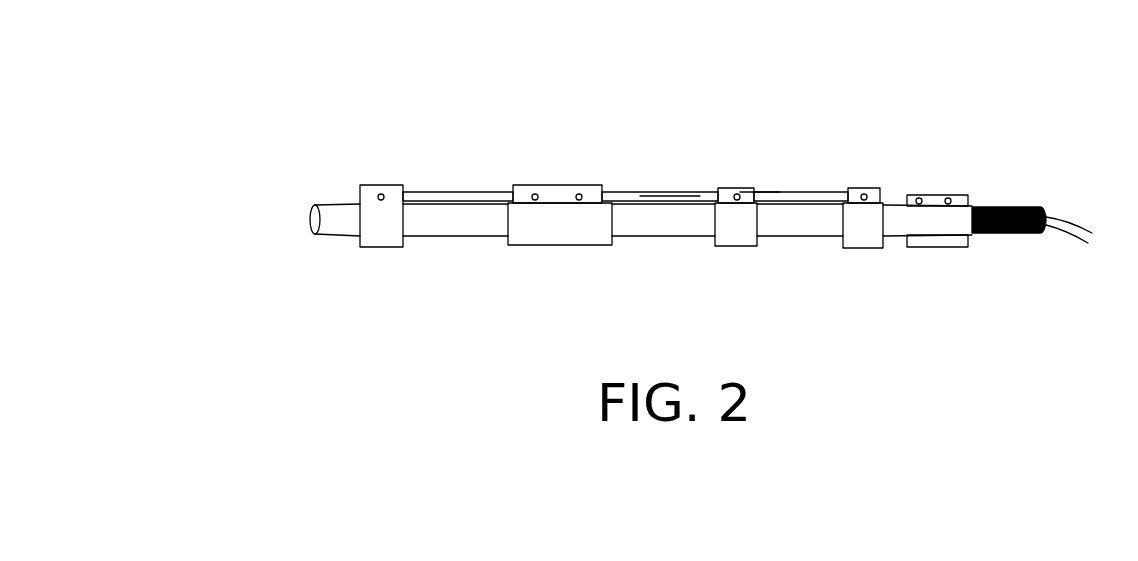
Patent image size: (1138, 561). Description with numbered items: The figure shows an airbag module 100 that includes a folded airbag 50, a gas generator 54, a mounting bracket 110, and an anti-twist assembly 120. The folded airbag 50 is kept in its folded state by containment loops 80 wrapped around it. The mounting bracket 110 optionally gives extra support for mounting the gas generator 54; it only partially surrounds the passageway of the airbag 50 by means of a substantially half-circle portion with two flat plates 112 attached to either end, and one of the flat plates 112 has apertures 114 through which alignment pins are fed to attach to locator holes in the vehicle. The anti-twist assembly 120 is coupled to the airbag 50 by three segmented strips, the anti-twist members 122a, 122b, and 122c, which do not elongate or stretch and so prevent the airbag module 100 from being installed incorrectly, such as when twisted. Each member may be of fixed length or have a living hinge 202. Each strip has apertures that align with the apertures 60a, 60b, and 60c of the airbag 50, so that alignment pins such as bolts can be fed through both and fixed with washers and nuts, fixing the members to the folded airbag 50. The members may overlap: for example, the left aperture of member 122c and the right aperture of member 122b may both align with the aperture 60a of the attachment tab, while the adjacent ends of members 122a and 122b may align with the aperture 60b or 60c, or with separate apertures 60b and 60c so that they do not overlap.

The airbag module 100 is at (955, 140).
The airbag 50 is at (328, 222).
The gas generator 54 is at (1040, 207).
The containment loops 80 is at (372, 188).
The anti-twist member 122a is at (427, 193).
The anti-twist member 122b is at (640, 187).
The anti-twist member 122c is at (807, 187).
The anti-twist assembly 120 is at (763, 187).
The living hinge 202 is at (660, 187).
The aperture 60a is at (743, 205).
The aperture 60b is at (580, 203).
The aperture 60c is at (534, 207).
The mounting bracket 110 is at (922, 247).
The flat plates 112 is at (967, 197).
The apertures 114 is at (950, 198).